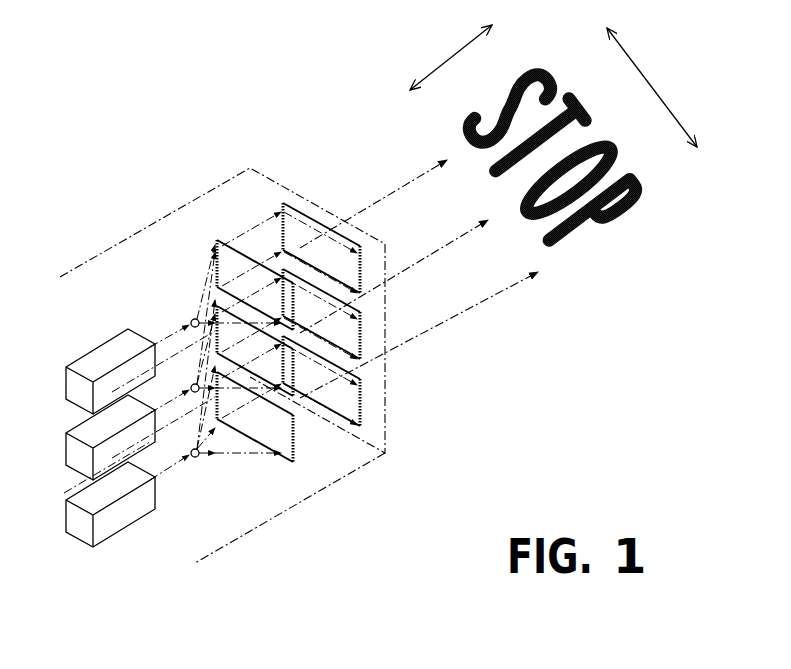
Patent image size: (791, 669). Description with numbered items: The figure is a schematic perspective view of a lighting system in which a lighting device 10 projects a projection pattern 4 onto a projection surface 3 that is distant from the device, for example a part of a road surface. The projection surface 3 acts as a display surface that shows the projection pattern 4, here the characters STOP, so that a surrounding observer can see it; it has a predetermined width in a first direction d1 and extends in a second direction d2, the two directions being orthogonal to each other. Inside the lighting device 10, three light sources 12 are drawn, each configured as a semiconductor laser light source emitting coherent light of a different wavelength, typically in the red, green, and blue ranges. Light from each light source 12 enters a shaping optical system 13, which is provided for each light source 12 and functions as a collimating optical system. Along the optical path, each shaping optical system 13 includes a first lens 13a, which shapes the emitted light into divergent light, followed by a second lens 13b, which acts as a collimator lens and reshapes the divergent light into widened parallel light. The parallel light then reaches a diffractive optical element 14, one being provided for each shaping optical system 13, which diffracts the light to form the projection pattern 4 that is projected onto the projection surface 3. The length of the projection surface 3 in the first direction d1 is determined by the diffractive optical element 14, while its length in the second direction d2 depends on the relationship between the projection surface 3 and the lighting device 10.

The projection surface 3 is at (613, 246).
The projection pattern 4 is at (555, 181).
The lighting device 10 is at (177, 241).
The light source 12 is at (121, 514).
The shaping optical system 13 is at (291, 410).
The first lens 13a is at (200, 455).
The second lens 13b is at (311, 444).
The diffractive optical element 14 is at (361, 408).
The first direction d1 is at (652, 87).
The second direction d2 is at (451, 57).